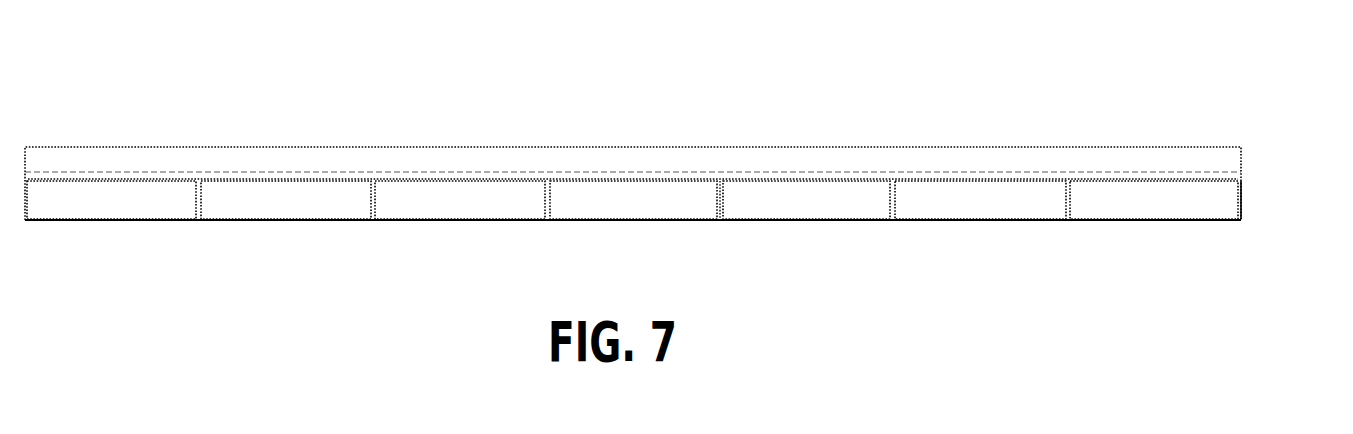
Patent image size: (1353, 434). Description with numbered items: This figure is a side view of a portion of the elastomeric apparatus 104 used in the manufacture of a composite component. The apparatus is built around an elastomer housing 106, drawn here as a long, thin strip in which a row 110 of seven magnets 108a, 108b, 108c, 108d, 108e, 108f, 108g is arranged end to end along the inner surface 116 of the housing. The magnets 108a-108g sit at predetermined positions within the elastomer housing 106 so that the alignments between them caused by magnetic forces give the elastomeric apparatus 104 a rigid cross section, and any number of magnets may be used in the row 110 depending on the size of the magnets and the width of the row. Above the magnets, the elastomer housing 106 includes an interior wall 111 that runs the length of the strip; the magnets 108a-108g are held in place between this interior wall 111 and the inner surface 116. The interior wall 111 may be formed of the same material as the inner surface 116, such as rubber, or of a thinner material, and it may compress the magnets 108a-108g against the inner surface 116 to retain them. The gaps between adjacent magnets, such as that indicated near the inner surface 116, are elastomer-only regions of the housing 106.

The elastomeric apparatus 104 is at (687, 179).
The elastomer housing 106 is at (687, 164).
The magnet 108a is at (112, 207).
The magnet 108b is at (286, 207).
The magnet 108c is at (460, 207).
The magnet 108d is at (633, 207).
The magnet 108e is at (805, 207).
The magnet 108f is at (978, 207).
The magnet 108g is at (1153, 207).
The row 110 is at (1246, 200).
The interior wall 111 is at (1138, 170).
The inner surface 116 is at (723, 226).